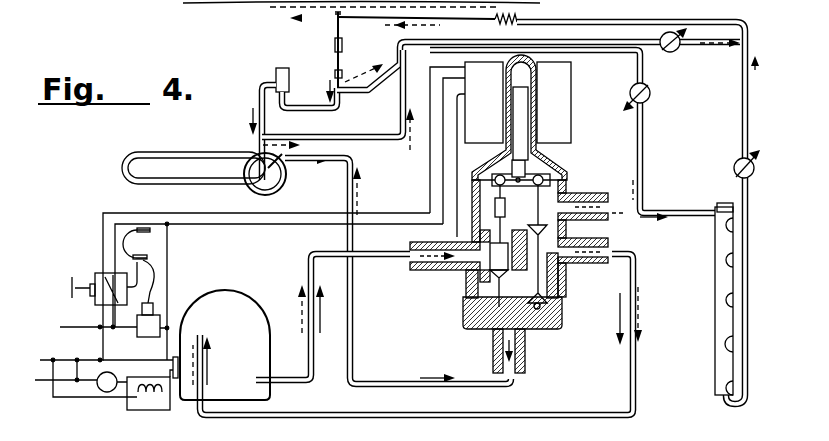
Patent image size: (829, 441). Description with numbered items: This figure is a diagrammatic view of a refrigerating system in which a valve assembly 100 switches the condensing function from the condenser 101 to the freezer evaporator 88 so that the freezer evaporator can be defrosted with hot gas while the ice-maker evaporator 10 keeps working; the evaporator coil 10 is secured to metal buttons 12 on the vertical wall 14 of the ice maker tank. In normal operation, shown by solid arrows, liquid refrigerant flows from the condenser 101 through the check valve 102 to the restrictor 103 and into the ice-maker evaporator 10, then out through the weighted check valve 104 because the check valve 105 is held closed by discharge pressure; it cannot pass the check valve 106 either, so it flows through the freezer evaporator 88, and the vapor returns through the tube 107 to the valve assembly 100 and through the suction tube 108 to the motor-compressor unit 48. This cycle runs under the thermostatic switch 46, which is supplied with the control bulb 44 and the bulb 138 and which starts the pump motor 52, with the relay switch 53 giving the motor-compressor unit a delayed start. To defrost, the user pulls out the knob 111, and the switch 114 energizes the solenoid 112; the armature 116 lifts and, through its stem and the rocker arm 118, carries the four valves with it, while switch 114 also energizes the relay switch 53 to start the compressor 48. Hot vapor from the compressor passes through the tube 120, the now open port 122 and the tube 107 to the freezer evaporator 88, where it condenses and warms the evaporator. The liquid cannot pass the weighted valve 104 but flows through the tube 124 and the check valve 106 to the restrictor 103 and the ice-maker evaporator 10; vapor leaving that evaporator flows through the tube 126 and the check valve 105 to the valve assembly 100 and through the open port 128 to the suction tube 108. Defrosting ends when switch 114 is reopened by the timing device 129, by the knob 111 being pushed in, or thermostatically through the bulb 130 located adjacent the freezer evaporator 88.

The evaporator coil 10 is at (343, 43).
The metal buttons 12 is at (341, 15).
The vertical wall 14 is at (335, 26).
The control bulb 44 is at (143, 258).
The thermostatic switch 46 is at (148, 338).
The motor-compressor unit 48 is at (225, 345).
The pump motor 52 is at (111, 380).
The relay switch 53 is at (130, 408).
The freezer evaporator 88 is at (121, 167).
The valve assembly 100 is at (456, 168).
The condenser 101 is at (715, 302).
The check valve 102 is at (733, 169).
The restrictor 103 is at (513, 19).
The weighted check valve 104 is at (275, 70).
The check valve 105 is at (651, 95).
The check valve 106 is at (679, 50).
The tube 107 is at (353, 321).
The suction tube 108 is at (630, 394).
The knob 111 is at (71, 283).
The solenoid 112 is at (518, 102).
The switch 114 is at (96, 302).
The armature 116 is at (522, 118).
The rocker arm 118 is at (540, 172).
The tube 120 is at (309, 277).
The port 122 is at (470, 284).
The tube 124 is at (439, 44).
The tube 126 is at (646, 78).
The port 128 is at (572, 245).
The timing device 129 is at (90, 296).
The bulb 130 is at (115, 288).
The bulb 138 is at (145, 227).